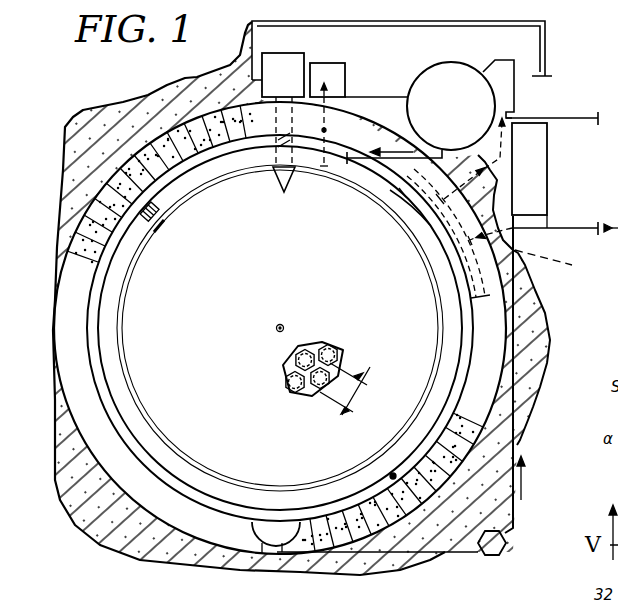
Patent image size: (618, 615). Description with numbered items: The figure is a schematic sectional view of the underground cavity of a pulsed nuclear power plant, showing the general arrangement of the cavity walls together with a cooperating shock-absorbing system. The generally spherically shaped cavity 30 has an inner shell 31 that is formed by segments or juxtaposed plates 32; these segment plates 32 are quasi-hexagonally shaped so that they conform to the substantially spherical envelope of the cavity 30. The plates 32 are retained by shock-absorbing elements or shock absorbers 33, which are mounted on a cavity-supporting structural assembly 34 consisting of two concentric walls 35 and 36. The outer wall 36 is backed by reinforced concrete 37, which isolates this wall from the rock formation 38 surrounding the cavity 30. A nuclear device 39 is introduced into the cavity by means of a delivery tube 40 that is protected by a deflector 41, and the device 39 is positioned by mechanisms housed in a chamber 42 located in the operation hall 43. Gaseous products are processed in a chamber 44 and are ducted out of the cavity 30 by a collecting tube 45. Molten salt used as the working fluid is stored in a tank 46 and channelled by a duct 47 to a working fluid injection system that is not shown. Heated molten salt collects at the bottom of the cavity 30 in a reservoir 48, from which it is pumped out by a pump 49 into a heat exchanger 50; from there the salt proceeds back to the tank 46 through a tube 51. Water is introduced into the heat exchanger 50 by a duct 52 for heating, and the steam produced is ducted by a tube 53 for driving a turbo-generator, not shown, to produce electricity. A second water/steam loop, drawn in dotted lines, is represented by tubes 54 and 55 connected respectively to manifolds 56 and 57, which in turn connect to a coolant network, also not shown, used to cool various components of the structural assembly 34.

The cavity 30 is at (334, 261).
The inner shell 31 is at (158, 430).
The segment plates 32 is at (290, 392).
The shock absorbers 33 is at (158, 212).
The cavity-supporting structural assembly 34 is at (390, 474).
The inner concentric wall 35 is at (418, 440).
The outer wall 36 is at (458, 405).
The reinforced concrete 37 is at (418, 530).
The rock formation 38 is at (527, 396).
The nuclear device 39 is at (284, 325).
The delivery tube 40 is at (273, 172).
The deflector 41 is at (290, 192).
The chamber 42 is at (275, 86).
The operation hall 43 is at (370, 53).
The chamber 44 is at (319, 83).
The collecting tube 45 is at (326, 130).
The tank 46 is at (441, 115).
The duct 47 is at (374, 172).
The reservoir 48 is at (240, 570).
The pump 49 is at (507, 545).
The heat exchanger 50 is at (519, 180).
The tube 51 is at (525, 93).
The duct 52 is at (572, 228).
The tube 53 is at (578, 119).
The tube 54 is at (559, 264).
The tube 55 is at (456, 208).
The manifold 56 is at (460, 262).
The manifold 57 is at (402, 193).